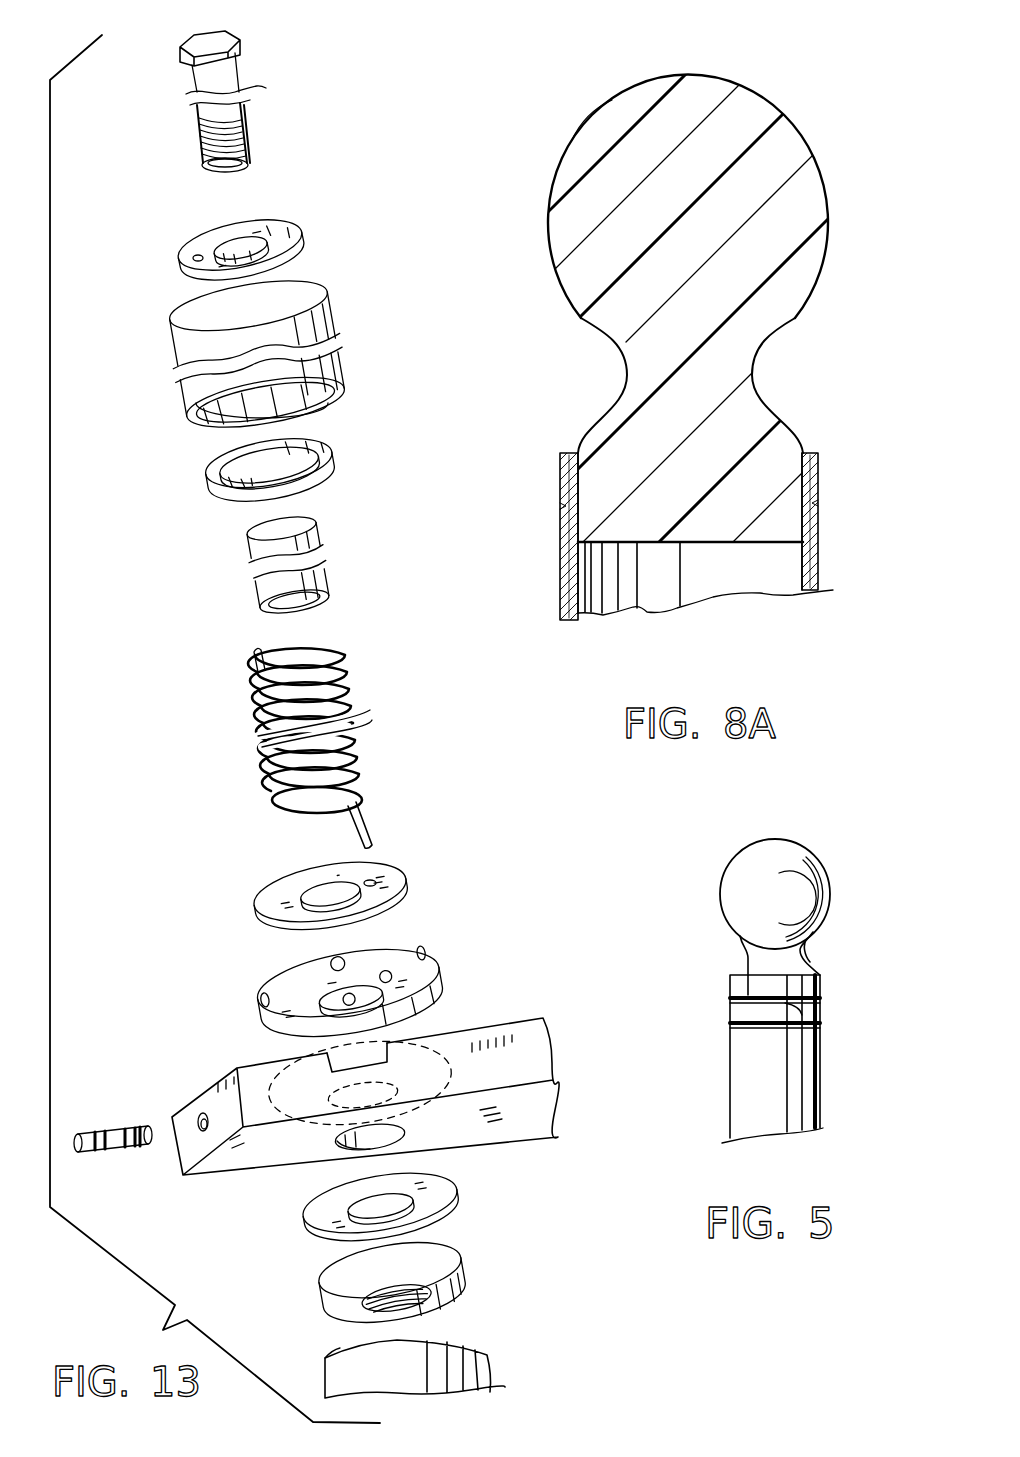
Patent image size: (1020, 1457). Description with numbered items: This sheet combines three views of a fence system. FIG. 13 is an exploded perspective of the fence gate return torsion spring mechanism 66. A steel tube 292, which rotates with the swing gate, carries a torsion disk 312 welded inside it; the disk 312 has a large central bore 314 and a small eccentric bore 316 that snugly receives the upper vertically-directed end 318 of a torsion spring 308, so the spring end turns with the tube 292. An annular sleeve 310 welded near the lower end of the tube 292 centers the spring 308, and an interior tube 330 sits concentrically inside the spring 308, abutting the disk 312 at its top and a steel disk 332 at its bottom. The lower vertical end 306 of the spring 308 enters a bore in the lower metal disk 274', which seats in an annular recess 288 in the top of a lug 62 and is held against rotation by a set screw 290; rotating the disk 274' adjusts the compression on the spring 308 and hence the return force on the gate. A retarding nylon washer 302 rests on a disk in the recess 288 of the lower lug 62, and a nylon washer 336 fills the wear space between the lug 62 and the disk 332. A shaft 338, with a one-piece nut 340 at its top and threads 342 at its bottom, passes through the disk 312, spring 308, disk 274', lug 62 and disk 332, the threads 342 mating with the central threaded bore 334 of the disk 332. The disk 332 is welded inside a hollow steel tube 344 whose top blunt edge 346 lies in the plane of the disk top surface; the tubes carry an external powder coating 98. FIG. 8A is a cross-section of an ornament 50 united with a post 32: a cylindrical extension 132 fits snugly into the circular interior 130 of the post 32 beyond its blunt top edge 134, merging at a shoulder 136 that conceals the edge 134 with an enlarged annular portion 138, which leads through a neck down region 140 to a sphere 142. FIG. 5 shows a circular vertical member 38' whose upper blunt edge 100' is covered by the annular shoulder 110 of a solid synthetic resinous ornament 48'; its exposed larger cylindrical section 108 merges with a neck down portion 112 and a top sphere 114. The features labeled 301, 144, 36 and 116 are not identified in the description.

In FIG. 13, the nut 340 is at (206, 35).
In FIG. 13, the shaft 338 is at (236, 92).
In FIG. 13, the threads 342 is at (255, 166).
In FIG. 13, the torsion disk 312 is at (285, 222).
In FIG. 13, the central bore 314 is at (272, 266).
In FIG. 13, the eccentric bore 316 is at (196, 262).
In FIG. 13, the powder coating 98 is at (257, 353).
In FIG. 5, the powder coating 98 is at (761, 1064).
In FIG. 13, the steel tube 292 is at (337, 398).
In FIG. 13, the annular sleeve 310 is at (322, 437).
In FIG. 13, the interior tube 330 is at (330, 540).
In FIG. 13, the upper vertically-directed end 318 is at (262, 652).
In FIG. 13, the torsion spring 308 is at (342, 648).
In FIG. 13, the lower vertical end 306 is at (370, 822).
In FIG. 13, the retarding nylon washer 302 is at (381, 868).
In FIG. 13, the washer hole 301 is at (405, 892).
In FIG. 13, the lower metal disk 274' is at (304, 990).
In FIG. 13, the annular recess 288 is at (382, 1060).
In FIG. 13, the lug 62 is at (513, 1020).
In FIG. 13, the set screw 290 is at (125, 1152).
In FIG. 13, the nylon washer 336 is at (432, 1172).
In FIG. 13, the steel disk 332 is at (428, 1263).
In FIG. 13, the central threaded bore 334 is at (377, 1310).
In FIG. 13, the top blunt edge 346 is at (340, 1348).
In FIG. 13, the hollow steel tube 344 is at (462, 1368).
In FIG. 13, the return torsion spring mechanism 66 is at (160, 772).
In FIG. 8A, the ornament 50 is at (760, 85).
In FIG. 8A, the sphere 142 is at (687, 308).
In FIG. 8A, the neck down region 140 is at (735, 365).
In FIG. 8A, the annular diametrally-enlarged portion 138 is at (562, 450).
In FIG. 8A, the shoulder 136 is at (560, 505).
In FIG. 8A, the blunt top edge 134 is at (816, 450).
In FIG. 8A, the sleeve 144 is at (820, 503).
In FIG. 8A, the ball shank 36 is at (820, 555).
In FIG. 8A, the post 32 is at (548, 578).
In FIG. 8A, the circular interior 130 is at (803, 590).
In FIG. 8A, the cylindrical extension 132 is at (690, 518).
In FIG. 5, the ornament 48' is at (769, 824).
In FIG. 5, the top sphere 114 is at (812, 880).
In FIG. 5, the neck down portion 112 is at (802, 948).
In FIG. 5, the upper blunt edge 100' is at (690, 949).
In FIG. 5, the larger cylindrical section 108 is at (820, 990).
In FIG. 5, the annular shoulder 110 is at (820, 1012).
In FIG. 5, the flange 116 is at (820, 1025).
In FIG. 5, the circular vertical member 38' is at (815, 1059).